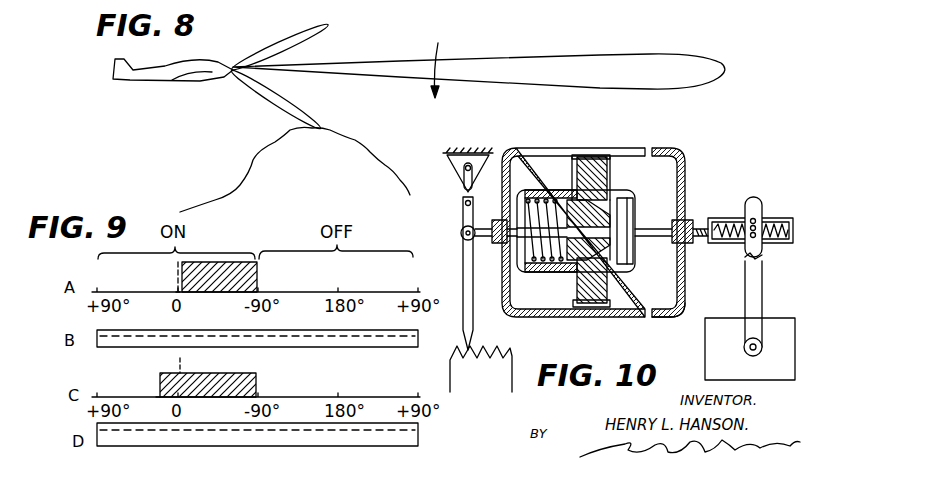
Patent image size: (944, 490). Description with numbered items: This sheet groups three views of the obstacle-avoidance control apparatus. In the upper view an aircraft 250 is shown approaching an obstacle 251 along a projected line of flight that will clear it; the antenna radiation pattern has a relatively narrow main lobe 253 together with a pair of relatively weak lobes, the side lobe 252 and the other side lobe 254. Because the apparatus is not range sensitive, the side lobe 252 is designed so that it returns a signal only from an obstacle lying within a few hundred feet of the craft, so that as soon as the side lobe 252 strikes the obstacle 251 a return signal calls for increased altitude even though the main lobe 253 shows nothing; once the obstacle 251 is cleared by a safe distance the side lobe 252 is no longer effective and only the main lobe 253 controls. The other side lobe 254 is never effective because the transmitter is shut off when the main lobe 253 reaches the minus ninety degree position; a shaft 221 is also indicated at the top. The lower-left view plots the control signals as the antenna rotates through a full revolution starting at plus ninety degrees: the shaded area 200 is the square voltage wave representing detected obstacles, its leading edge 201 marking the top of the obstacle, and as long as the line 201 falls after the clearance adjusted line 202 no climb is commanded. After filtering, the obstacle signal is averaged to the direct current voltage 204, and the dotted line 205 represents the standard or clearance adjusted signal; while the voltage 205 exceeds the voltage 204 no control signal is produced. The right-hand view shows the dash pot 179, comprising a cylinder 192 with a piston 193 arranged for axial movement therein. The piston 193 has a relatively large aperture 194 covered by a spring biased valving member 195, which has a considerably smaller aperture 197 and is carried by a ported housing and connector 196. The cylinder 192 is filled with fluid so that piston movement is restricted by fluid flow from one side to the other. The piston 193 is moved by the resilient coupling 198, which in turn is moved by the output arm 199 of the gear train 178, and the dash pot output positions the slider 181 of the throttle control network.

In FIG. 8, the shaft 221 is at (496, 0).
In FIG. 8, the aircraft 250 is at (189, 79).
In FIG. 8, the obstacle 251 is at (255, 160).
In FIG. 8, the side lobe 252 is at (300, 107).
In FIG. 8, the main lobe 253 is at (585, 78).
In FIG. 8, the other side lobe 254 is at (320, 31).
In FIG. 9, the shaded area 200 is at (257, 280).
In FIG. 9, the leading edge of the wave 201 is at (183, 293).
In FIG. 9, the clearance adjusted line 202 is at (178, 262).
In FIG. 9, the average direct current voltage 204 is at (300, 342).
In FIG. 9, the standard or clearance adjusted signal 205 is at (373, 341).
In FIG. 10, the gear train 178 is at (717, 350).
In FIG. 10, the dash pot 179 is at (597, 318).
In FIG. 10, the slider 181 is at (473, 300).
In FIG. 10, the cylinder 192 is at (627, 318).
In FIG. 10, the piston 193 is at (578, 298).
In FIG. 10, the aperture 194 is at (613, 232).
In FIG. 10, the spring biased valving member 195 is at (573, 268).
In FIG. 10, the ported housing and connector 196 is at (528, 193).
In FIG. 10, the aperture 197 is at (618, 247).
In FIG. 10, the resilient coupling 198 is at (768, 183).
In FIG. 10, the output arm 199 is at (752, 290).